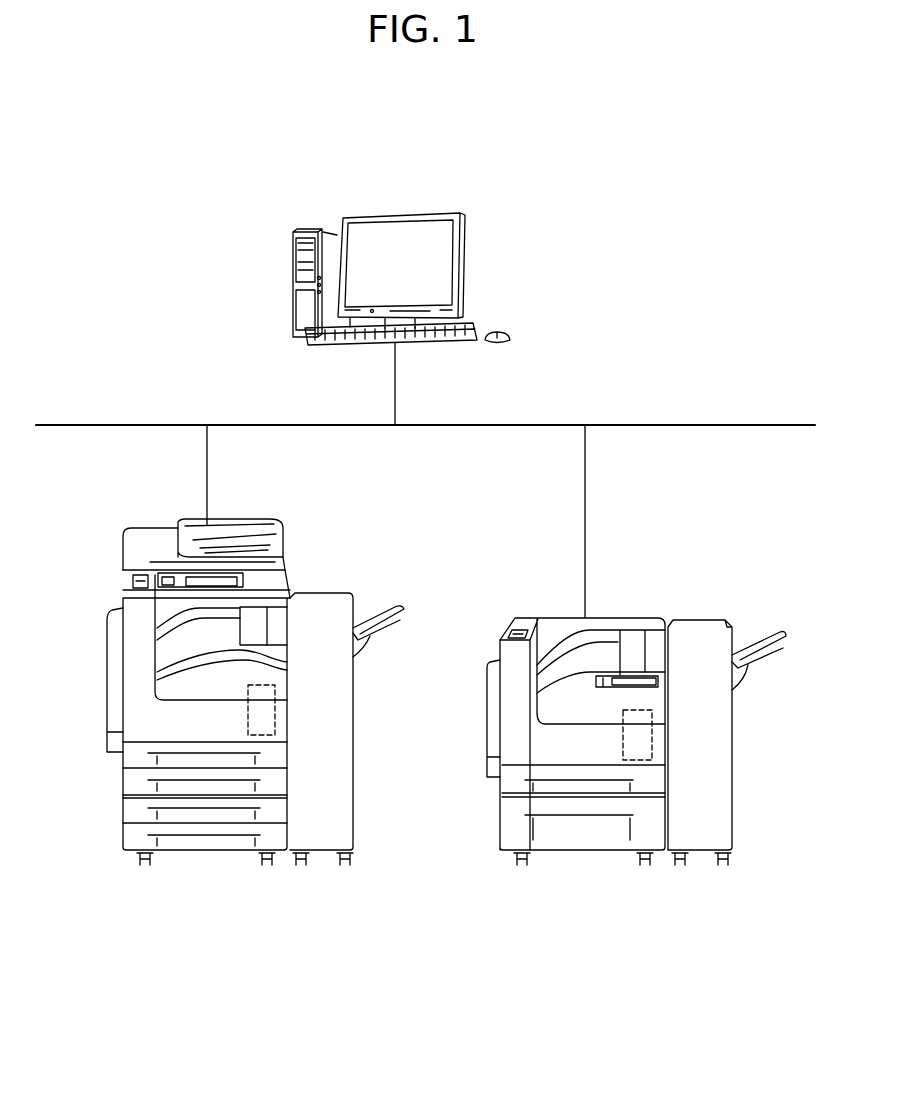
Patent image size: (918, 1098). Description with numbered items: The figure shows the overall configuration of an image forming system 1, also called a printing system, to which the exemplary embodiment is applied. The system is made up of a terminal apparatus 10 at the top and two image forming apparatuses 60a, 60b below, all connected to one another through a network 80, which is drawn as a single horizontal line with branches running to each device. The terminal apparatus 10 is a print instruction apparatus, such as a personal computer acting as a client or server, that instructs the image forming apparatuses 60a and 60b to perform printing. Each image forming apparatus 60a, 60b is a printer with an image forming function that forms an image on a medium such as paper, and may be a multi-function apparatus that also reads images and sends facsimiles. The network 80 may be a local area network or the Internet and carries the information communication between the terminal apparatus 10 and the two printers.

The image forming system 1 is at (603, 165).
The terminal apparatus 10 is at (395, 212).
The network 80 is at (666, 424).
The image forming apparatus 60a is at (339, 537).
The image forming apparatus 60b is at (667, 560).